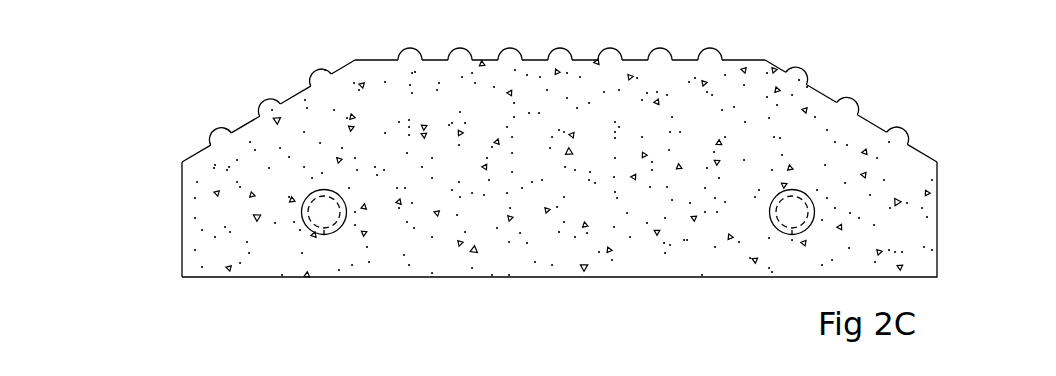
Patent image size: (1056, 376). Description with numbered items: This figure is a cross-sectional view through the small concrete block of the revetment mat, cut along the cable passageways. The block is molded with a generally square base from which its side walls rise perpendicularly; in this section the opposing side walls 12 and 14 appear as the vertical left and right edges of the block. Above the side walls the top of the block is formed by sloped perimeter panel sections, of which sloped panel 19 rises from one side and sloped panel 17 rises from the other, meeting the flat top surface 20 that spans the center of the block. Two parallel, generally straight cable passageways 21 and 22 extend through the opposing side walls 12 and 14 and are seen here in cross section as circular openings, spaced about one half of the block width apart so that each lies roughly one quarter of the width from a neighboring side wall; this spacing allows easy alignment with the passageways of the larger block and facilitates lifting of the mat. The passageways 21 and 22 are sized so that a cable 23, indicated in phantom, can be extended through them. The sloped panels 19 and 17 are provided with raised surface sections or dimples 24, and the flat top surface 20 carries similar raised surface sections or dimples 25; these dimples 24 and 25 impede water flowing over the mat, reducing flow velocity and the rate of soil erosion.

The side wall 12 is at (559, 168).
The side wall 14 is at (182, 220).
The sloped perimeter panel section 17 is at (822, 94).
The sloped perimeter panel section 19 is at (297, 94).
The flat top surface 20 is at (585, 60).
The cable passageway 21 is at (782, 221).
The cable passageway 22 is at (314, 221).
The cable 23 is at (325, 234).
The raised surface sections or dimples 24 is at (210, 132).
The raised surface sections or dimples 25 is at (453, 58).